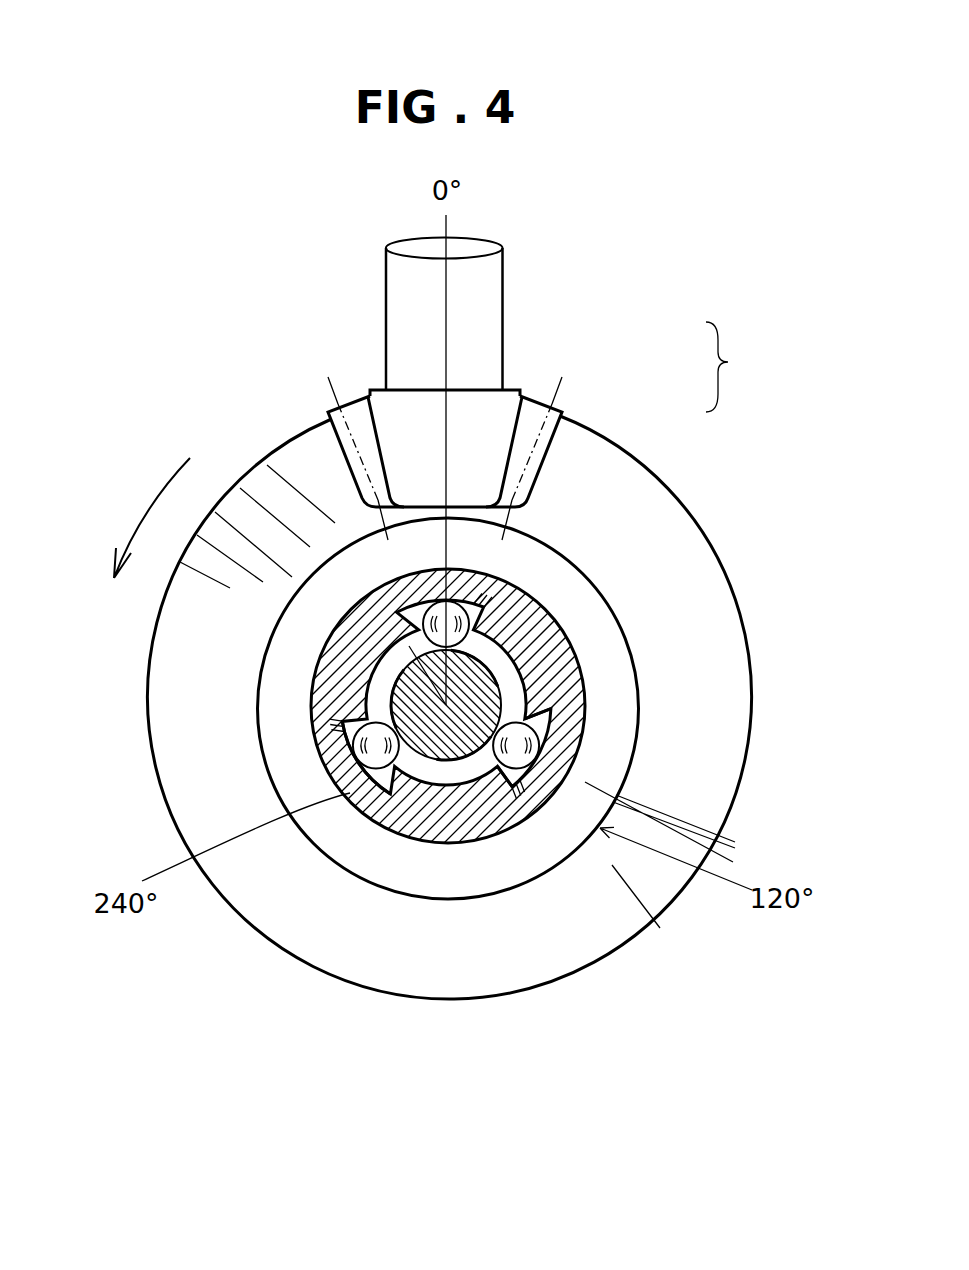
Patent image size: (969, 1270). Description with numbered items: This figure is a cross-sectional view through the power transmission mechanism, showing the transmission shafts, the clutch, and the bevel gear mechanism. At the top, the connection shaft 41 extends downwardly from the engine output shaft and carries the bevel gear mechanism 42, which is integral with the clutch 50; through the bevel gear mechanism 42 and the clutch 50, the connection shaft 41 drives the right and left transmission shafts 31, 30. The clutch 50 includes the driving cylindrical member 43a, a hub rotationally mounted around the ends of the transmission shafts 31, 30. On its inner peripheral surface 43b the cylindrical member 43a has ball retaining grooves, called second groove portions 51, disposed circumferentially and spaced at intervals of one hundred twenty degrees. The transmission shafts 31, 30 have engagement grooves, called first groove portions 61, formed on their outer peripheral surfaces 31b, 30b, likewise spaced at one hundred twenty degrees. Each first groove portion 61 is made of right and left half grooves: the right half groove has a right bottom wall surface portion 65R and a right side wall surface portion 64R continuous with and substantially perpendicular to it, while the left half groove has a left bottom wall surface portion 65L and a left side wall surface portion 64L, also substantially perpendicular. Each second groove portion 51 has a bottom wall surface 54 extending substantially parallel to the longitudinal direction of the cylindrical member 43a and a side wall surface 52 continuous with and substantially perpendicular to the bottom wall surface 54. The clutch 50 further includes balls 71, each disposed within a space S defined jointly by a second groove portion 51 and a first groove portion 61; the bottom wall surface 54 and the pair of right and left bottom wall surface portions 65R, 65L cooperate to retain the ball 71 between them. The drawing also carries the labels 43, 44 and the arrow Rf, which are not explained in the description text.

The left transmission shaft 30 is at (364, 557).
The right transmission shaft 31 is at (413, 617).
The outer peripheral surface of the left transmission shaft 30b is at (257, 517).
The outer peripheral surface of the right transmission shaft 31b is at (418, 662).
The connection shaft 41 is at (488, 283).
The bevel gear mechanism 42 is at (542, 431).
The clamp nut 43 is at (562, 398).
The driving cylindrical member 43a is at (518, 798).
The inner peripheral surface of the cylindrical member 43b is at (500, 775).
The flange 44 is at (577, 478).
The clutch 50 is at (322, 838).
The ball retaining groove (second groove portion) 51 is at (483, 572).
The side wall surface of the second groove portion 52 is at (603, 900).
The bottom wall surface of the second groove portion 54 is at (425, 701).
The engagement groove (first groove portion) 61 is at (494, 596).
The left side wall surface portion 64L is at (294, 891).
The right side wall surface portion 64R is at (387, 787).
The left bottom wall surface portion 65L is at (208, 762).
The right bottom wall surface portion 65R is at (357, 727).
The ball 71 is at (585, 478).
The space S is at (421, 600).
The rotation direction Rf is at (145, 539).